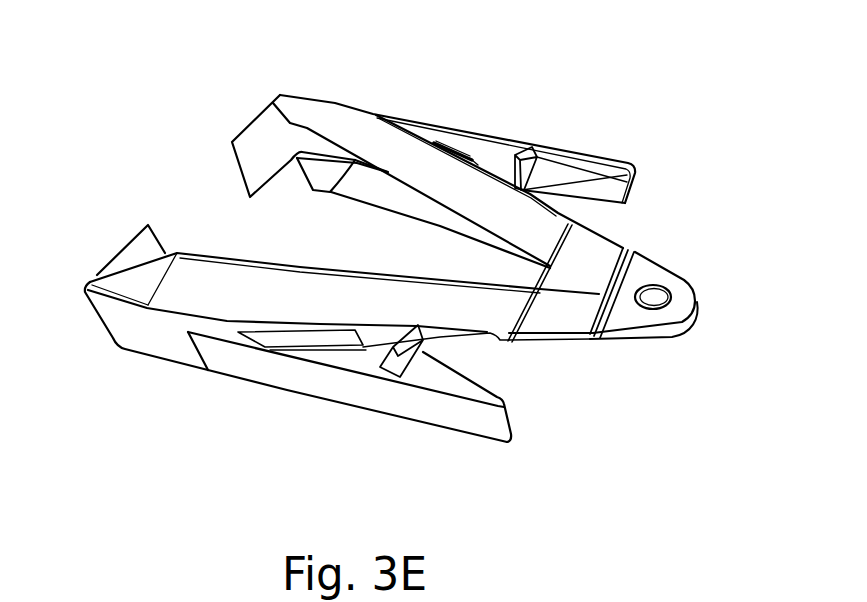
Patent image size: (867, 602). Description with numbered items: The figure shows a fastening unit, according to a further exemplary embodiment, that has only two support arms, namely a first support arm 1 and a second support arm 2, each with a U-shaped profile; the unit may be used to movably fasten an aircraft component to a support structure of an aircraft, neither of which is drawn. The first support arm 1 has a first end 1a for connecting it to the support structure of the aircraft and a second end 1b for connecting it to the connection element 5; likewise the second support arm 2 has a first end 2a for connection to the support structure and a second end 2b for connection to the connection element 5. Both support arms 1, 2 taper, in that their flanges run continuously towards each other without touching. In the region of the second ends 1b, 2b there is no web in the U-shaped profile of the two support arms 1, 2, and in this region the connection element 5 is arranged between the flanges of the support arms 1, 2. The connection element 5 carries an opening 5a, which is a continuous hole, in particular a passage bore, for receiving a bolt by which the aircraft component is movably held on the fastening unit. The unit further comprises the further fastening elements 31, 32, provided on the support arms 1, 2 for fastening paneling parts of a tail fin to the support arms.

The first support arm 1 is at (417, 148).
The first end of the first support arm 1a is at (295, 92).
The second end of the first support arm 1b is at (630, 236).
The second support arm 2 is at (248, 288).
The first end of the second support arm 2a is at (114, 345).
The second end of the second support arm 2b is at (577, 345).
The further fastening element 31 is at (572, 172).
The further fastening element 32 is at (447, 420).
The connection element 5 is at (680, 312).
The opening 5a is at (656, 297).